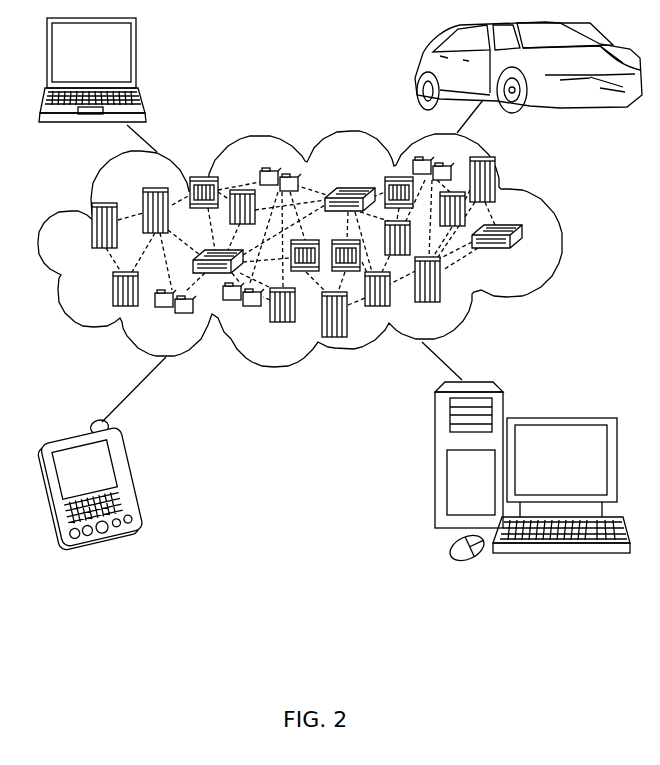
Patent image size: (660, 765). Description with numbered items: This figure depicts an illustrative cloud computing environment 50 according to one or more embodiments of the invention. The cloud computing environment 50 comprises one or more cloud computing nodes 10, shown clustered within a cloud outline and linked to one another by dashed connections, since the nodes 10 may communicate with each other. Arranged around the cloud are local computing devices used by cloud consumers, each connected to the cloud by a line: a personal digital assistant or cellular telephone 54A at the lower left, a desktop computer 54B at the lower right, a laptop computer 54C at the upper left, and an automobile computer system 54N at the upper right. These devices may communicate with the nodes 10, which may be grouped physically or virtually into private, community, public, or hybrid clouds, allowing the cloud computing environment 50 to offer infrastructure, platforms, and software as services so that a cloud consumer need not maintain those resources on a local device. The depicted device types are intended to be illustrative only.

The cloud computing nodes 10 is at (530, 255).
The cloud computing environment 50 is at (565, 232).
The personal digital assistant or cellular telephone 54A is at (130, 478).
The desktop computer 54B is at (557, 417).
The laptop computer 54C is at (138, 57).
The automobile computer system 54N is at (420, 72).